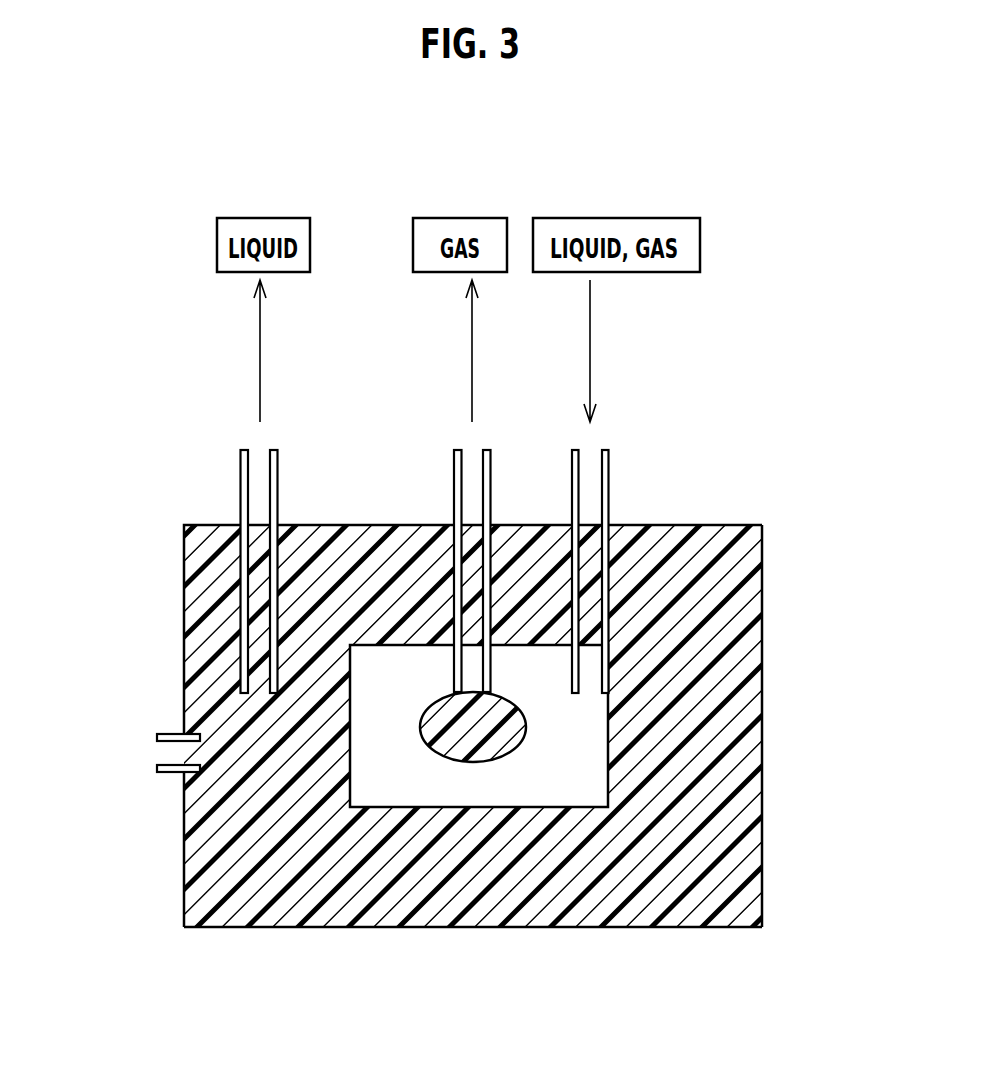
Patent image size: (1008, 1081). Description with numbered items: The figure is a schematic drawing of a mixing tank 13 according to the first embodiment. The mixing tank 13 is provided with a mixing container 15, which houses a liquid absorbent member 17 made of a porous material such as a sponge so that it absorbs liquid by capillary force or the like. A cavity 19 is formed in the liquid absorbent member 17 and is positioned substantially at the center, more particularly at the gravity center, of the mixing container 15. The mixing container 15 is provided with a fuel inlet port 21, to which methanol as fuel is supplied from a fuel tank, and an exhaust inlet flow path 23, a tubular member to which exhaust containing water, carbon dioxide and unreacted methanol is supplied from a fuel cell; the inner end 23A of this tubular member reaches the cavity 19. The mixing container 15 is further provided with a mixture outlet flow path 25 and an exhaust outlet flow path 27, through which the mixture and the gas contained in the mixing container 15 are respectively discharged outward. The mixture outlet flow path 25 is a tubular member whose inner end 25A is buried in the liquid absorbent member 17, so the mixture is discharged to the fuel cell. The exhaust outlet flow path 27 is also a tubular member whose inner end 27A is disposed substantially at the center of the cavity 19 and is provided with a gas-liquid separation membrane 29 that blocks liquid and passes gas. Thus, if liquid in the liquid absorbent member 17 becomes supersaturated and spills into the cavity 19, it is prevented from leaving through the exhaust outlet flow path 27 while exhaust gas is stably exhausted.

The mixing tank 13 is at (788, 579).
The mixing container 15 is at (762, 640).
The liquid absorbent member 17 is at (677, 907).
The cavity 19 is at (545, 788).
The fuel inlet port 21 is at (167, 755).
The exhaust inlet flow path 23 is at (609, 465).
The inner end 23A is at (587, 682).
The mixture outlet flow path 25 is at (240, 470).
The inner end 25A is at (245, 693).
The exhaust outlet flow path 27 is at (492, 490).
The inner end 27A is at (472, 682).
The gas-liquid separation membrane 29 is at (428, 737).